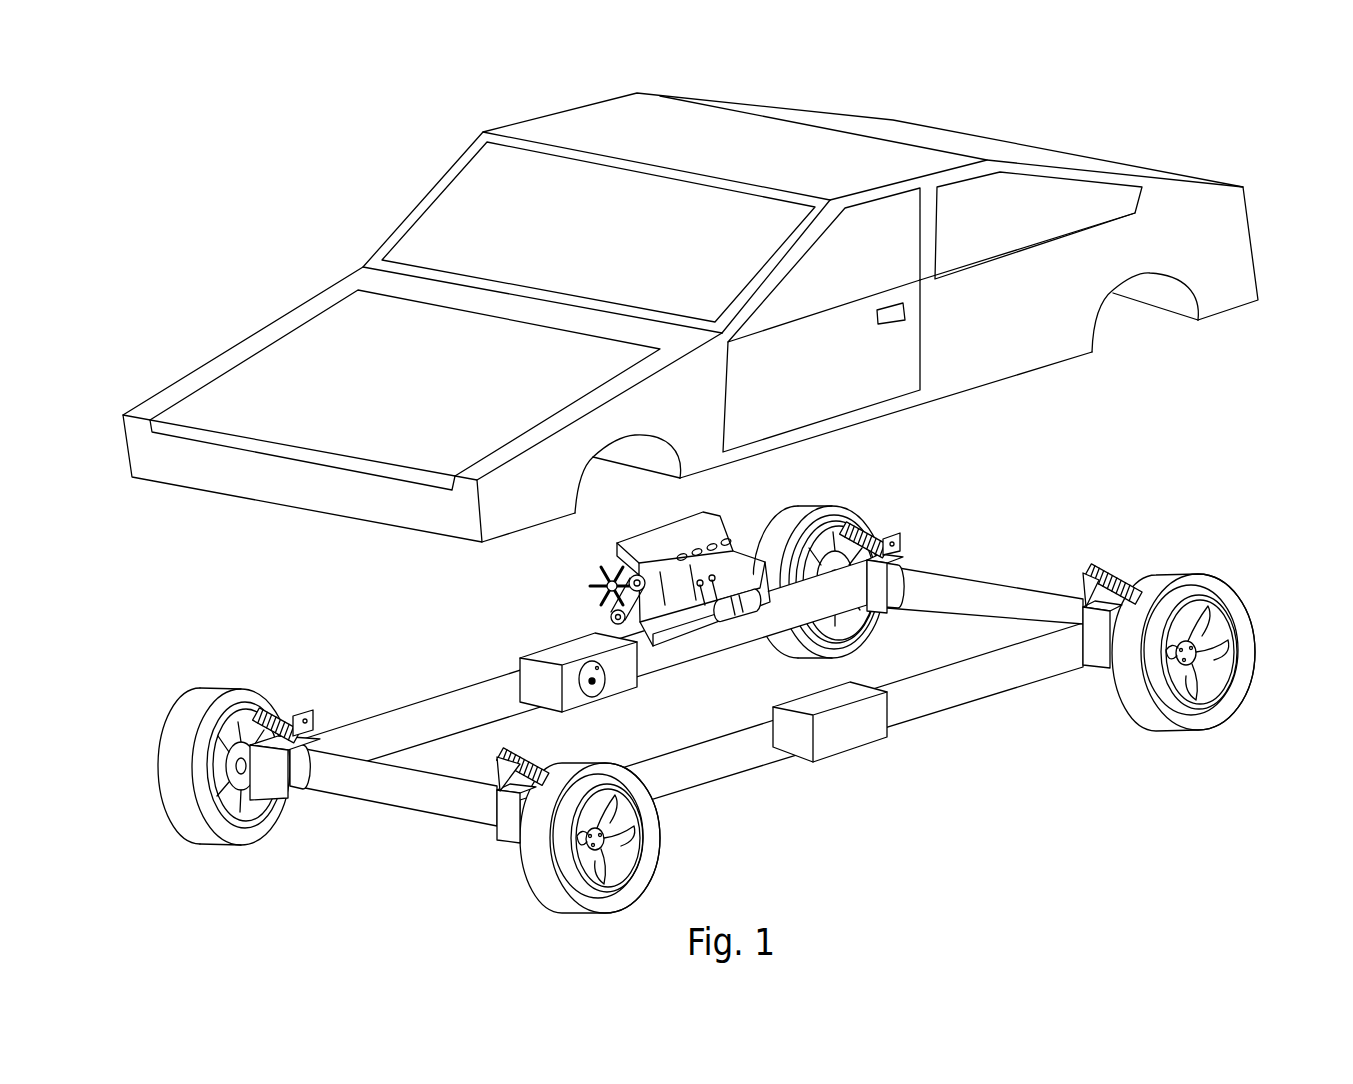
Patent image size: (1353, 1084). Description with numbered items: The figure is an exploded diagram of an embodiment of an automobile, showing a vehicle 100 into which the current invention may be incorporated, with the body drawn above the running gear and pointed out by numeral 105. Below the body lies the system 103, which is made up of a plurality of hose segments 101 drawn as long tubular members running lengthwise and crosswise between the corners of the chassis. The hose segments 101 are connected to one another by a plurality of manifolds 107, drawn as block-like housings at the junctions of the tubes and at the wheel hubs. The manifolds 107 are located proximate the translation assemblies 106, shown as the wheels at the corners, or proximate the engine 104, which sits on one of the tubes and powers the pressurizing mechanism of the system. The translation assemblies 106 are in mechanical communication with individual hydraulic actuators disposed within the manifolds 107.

The vehicle 100 is at (236, 126).
The hose segments 101 is at (973, 680).
The system 103 is at (346, 634).
The engine 104 is at (746, 509).
The vehicle body 105 is at (1137, 138).
The translation assemblies 106 is at (1257, 588).
The manifolds 107 is at (512, 822).